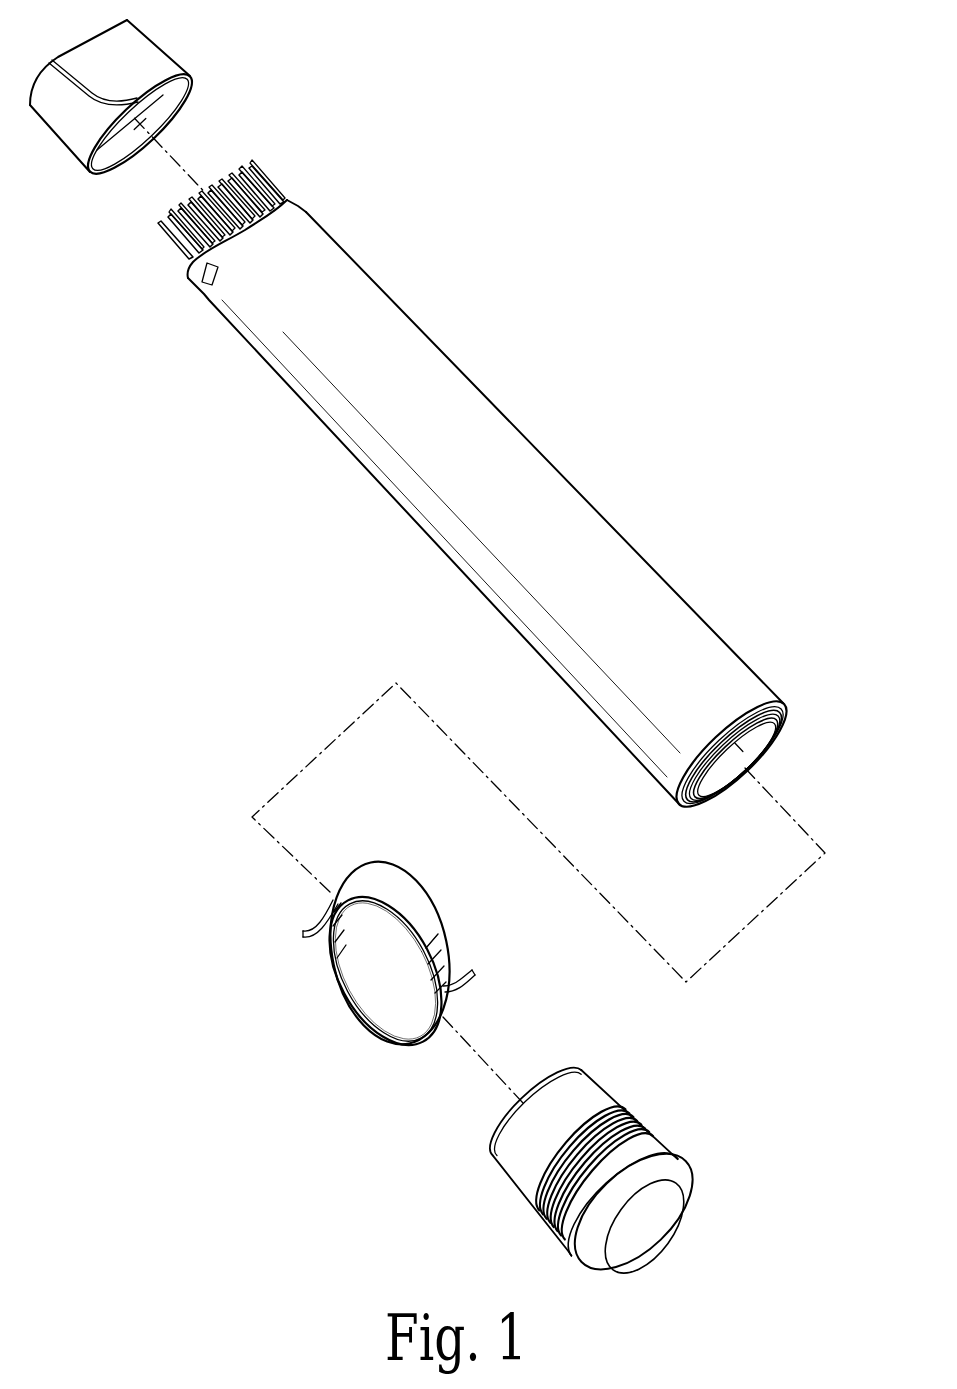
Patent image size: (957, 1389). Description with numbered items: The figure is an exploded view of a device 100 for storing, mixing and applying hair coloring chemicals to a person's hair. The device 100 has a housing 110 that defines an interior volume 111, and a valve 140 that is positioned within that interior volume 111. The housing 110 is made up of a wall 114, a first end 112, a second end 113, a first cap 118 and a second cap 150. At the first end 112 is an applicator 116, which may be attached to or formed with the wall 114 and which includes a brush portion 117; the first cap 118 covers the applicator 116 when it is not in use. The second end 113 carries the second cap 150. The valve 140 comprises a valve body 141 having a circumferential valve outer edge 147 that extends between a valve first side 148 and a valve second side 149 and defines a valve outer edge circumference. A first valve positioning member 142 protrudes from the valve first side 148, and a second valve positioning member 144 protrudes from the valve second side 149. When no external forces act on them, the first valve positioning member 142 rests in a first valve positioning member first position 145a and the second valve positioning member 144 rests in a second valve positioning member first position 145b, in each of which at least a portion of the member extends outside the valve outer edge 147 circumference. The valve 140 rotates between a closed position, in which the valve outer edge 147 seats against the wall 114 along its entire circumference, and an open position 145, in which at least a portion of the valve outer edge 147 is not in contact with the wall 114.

The device 100 is at (604, 102).
The housing 110 is at (477, 458).
The interior volume 111 is at (790, 768).
The first end 112 is at (310, 214).
The second end 113 is at (786, 705).
The wall 114 is at (570, 496).
The applicator 116 is at (294, 206).
The brush portion 117 is at (170, 252).
The first cap 118 is at (150, 52).
The valve 140 is at (360, 1030).
The valve body 141 is at (405, 978).
The first valve positioning member 142 is at (302, 935).
The second valve positioning member 144 is at (464, 983).
The open position 145 is at (292, 1045).
The first valve positioning member first position 145a is at (318, 925).
The second valve positioning member first position 145b is at (460, 974).
The circumferential valve outer edge 147 is at (413, 908).
The valve first side 148 is at (342, 986).
The valve second side 149 is at (393, 862).
The second cap 150 is at (693, 1172).